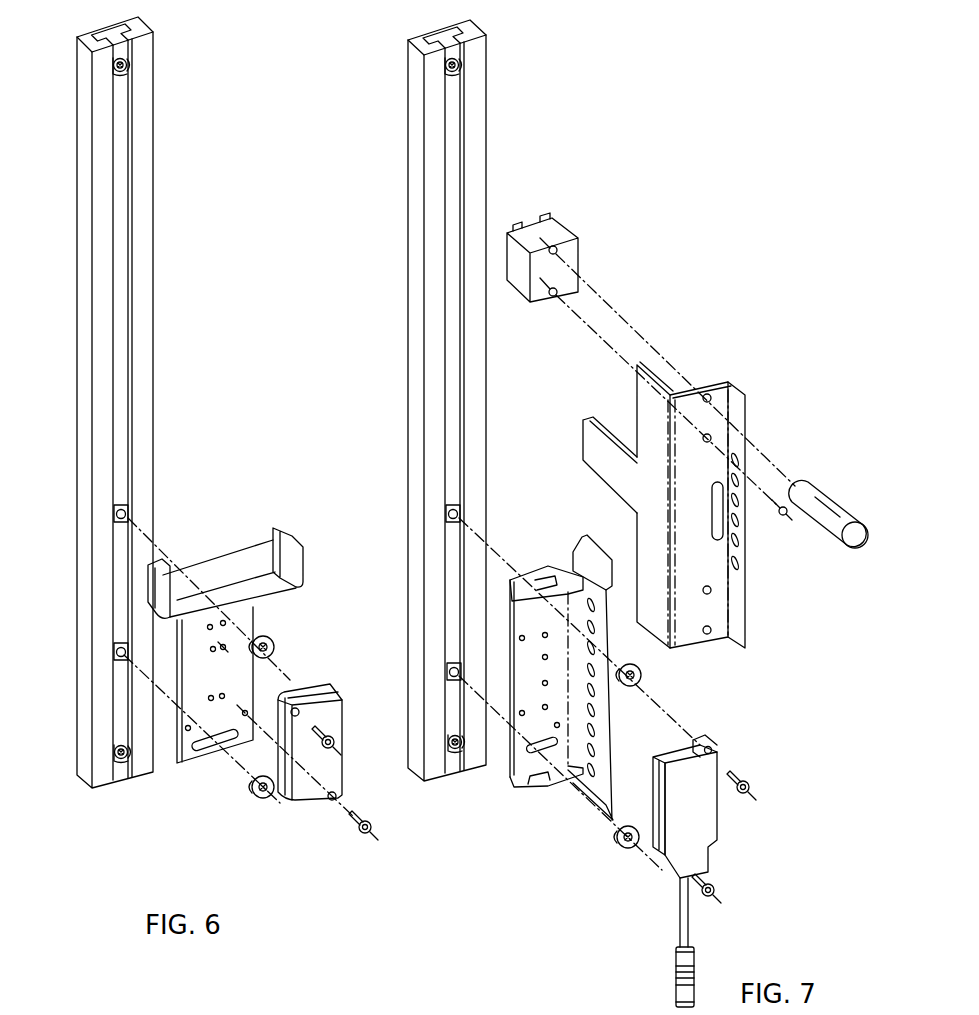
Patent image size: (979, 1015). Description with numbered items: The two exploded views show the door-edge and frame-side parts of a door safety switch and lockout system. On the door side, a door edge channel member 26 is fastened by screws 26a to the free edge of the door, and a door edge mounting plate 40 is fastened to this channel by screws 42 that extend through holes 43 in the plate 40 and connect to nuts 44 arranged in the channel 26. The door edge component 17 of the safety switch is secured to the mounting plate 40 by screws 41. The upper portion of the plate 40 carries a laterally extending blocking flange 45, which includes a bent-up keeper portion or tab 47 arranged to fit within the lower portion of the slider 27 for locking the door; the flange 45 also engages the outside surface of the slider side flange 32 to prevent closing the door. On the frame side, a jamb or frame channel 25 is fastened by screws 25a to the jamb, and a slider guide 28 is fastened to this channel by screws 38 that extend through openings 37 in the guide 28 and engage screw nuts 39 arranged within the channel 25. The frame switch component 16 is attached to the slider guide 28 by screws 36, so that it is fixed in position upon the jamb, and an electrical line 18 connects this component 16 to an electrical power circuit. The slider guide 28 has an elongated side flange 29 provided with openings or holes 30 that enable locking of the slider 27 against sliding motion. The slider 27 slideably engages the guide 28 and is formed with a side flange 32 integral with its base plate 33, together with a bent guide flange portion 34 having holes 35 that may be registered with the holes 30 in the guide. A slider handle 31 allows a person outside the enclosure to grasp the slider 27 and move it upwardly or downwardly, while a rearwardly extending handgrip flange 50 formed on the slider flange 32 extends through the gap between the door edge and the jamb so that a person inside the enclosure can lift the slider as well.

In FIG. 7, the jamb or frame component 16 is at (708, 827).
In FIG. 6, the door edge component 17 is at (342, 768).
In FIG. 7, the electrical line 18 is at (694, 958).
In FIG. 7, the jamb or frame channel 25 is at (487, 120).
In FIG. 7, the screws 25a is at (458, 62).
In FIG. 6, the door edge channel member 26 is at (153, 220).
In FIG. 6, the screws 26a is at (126, 62).
In FIG. 7, the slider 27 is at (679, 510).
In FIG. 7, the slider guide 28 is at (565, 703).
In FIG. 7, the elongated side flange 29 is at (582, 700).
In FIG. 7, the openings or holes 30 is at (588, 807).
In FIG. 7, the slider handle 31 is at (850, 516).
In FIG. 7, the side flange 32 is at (637, 397).
In FIG. 7, the base plate 33 is at (721, 639).
In FIG. 7, the bent guide flange portion 34 is at (782, 518).
In FIG. 7, the holes 35 is at (743, 577).
In FIG. 7, the screws 36 is at (749, 778).
In FIG. 7, the openings 37 is at (523, 784).
In FIG. 7, the screws 38 is at (642, 675).
In FIG. 7, the screw nuts 39 is at (461, 513).
In FIG. 6, the door edge mounting plate 40 is at (196, 725).
In FIG. 6, the screws 41 is at (334, 738).
In FIG. 6, the screws 42 is at (272, 640).
In FIG. 6, the holes 43 is at (218, 745).
In FIG. 6, the nuts 44 is at (132, 510).
In FIG. 6, the blocking flange 45 is at (250, 537).
In FIG. 6, the bent-up keeper portion or tab 47 is at (293, 537).
In FIG. 7, the handgrip flange 50 is at (590, 447).